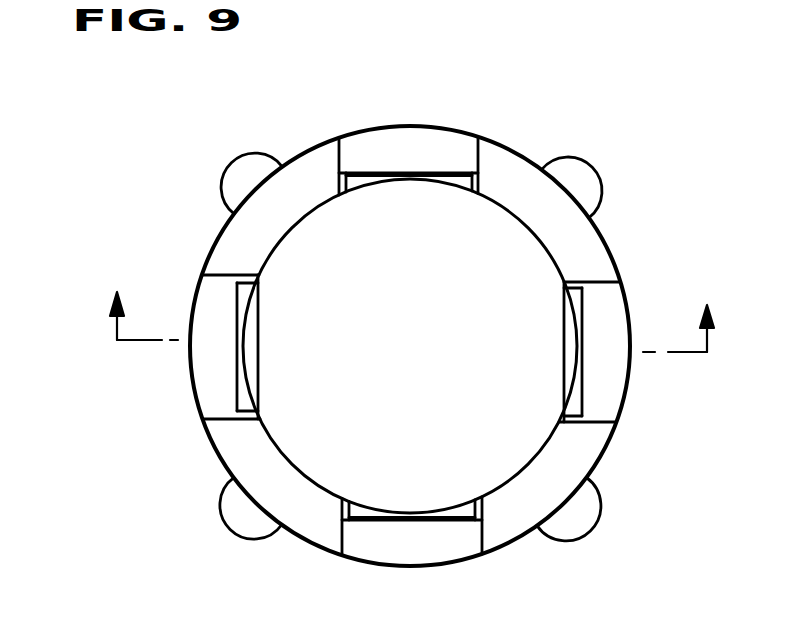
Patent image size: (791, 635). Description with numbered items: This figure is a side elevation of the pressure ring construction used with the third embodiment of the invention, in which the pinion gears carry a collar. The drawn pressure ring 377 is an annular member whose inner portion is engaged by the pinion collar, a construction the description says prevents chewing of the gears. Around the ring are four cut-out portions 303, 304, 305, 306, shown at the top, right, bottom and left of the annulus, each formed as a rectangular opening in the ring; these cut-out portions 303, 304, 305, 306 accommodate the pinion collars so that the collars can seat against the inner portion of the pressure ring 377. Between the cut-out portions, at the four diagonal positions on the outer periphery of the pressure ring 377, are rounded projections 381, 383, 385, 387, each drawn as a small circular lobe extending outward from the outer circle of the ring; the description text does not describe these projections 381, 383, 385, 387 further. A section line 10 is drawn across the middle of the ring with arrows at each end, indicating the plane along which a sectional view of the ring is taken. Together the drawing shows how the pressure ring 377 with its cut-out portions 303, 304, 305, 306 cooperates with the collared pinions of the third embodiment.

The pressure ring 377 is at (612, 240).
The cut-out portion 303 is at (355, 180).
The cut-out portion 304 is at (575, 295).
The cut-out portion 305 is at (355, 512).
The cut-out portion 306 is at (247, 403).
The upper left lobe 381 is at (243, 168).
The upper right lobe 383 is at (582, 177).
The lower right lobe 385 is at (583, 520).
The lower left lobe 387 is at (250, 522).
The section line 10- 10 is at (412, 314).